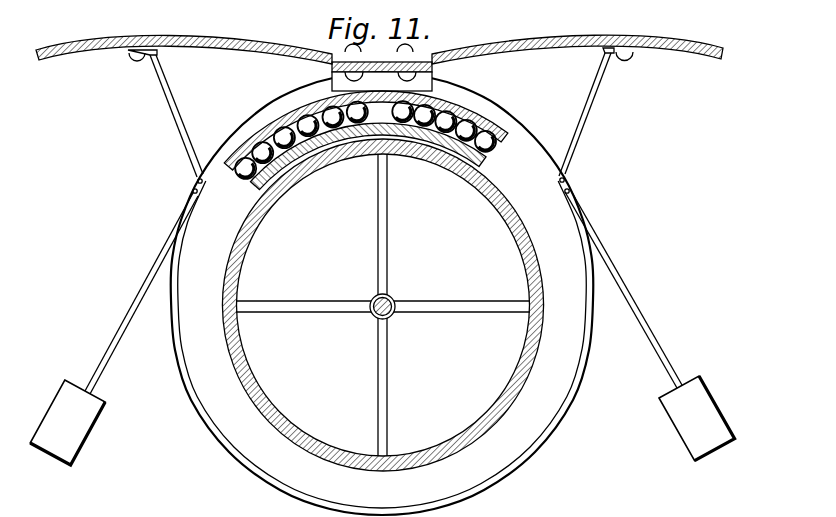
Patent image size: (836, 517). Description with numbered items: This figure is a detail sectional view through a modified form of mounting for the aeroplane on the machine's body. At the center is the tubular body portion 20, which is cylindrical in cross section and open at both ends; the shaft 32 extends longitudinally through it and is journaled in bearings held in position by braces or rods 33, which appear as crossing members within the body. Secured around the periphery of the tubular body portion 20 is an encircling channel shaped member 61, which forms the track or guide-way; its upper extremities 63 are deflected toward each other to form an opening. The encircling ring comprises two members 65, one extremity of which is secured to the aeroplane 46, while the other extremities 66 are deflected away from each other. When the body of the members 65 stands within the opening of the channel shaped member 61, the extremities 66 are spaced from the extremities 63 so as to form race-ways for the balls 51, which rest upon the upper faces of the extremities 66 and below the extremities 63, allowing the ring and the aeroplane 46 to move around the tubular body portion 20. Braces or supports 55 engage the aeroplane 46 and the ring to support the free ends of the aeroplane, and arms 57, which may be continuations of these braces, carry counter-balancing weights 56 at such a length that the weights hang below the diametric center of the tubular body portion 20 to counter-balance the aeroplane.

The aeroplane 46 is at (220, 29).
The members 65 is at (430, 83).
The channel shaped member 61 is at (202, 224).
The upper extremities 63 is at (284, 120).
The extremities 66 is at (389, 129).
The balls 51 is at (491, 137).
The tubular body portion 20 is at (333, 155).
The braces or rods 33 is at (379, 266).
The shaft 32 is at (375, 317).
The braces or supports 55 is at (180, 122).
The arms 57 is at (130, 312).
The counter-balancing weights 56 is at (60, 403).